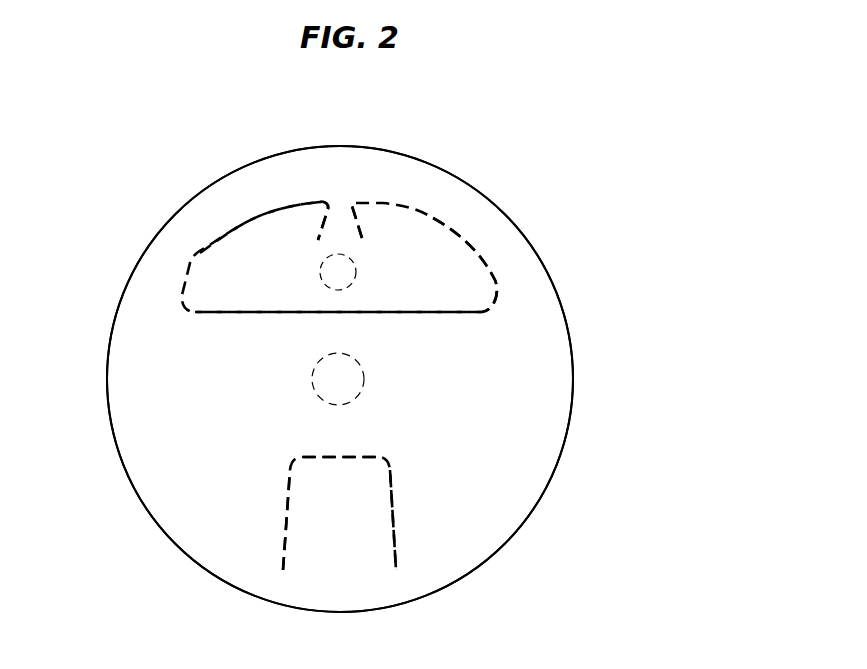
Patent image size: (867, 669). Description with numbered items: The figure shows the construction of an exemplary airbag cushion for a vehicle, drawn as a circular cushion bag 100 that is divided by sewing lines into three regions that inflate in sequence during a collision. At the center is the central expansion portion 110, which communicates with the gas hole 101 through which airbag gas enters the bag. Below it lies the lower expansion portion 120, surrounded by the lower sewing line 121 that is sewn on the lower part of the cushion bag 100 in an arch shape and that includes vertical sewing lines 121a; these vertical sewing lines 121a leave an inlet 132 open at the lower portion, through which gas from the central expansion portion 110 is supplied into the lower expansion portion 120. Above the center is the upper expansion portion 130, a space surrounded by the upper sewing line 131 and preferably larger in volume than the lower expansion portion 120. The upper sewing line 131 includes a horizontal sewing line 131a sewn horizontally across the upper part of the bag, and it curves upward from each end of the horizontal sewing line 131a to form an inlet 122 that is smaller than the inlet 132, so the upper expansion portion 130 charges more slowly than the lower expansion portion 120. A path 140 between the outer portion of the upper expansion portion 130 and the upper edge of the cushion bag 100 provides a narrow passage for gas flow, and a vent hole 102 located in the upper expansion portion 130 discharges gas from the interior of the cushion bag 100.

The cushion bag 100 is at (380, 131).
The gas hole 101 is at (348, 380).
The vent hole 102 is at (338, 270).
The central expansion portion 110 is at (263, 395).
The lower expansion portion 120 is at (338, 478).
The lower sewing line 121 is at (342, 457).
The vertical sewing lines 121a is at (285, 517).
The inlet 122 is at (340, 210).
The upper expansion portion 130 is at (427, 275).
The upper sewing line 131 is at (198, 253).
The horizontal sewing line 131a is at (230, 313).
The inlet 132 is at (362, 560).
The path 140 is at (497, 253).